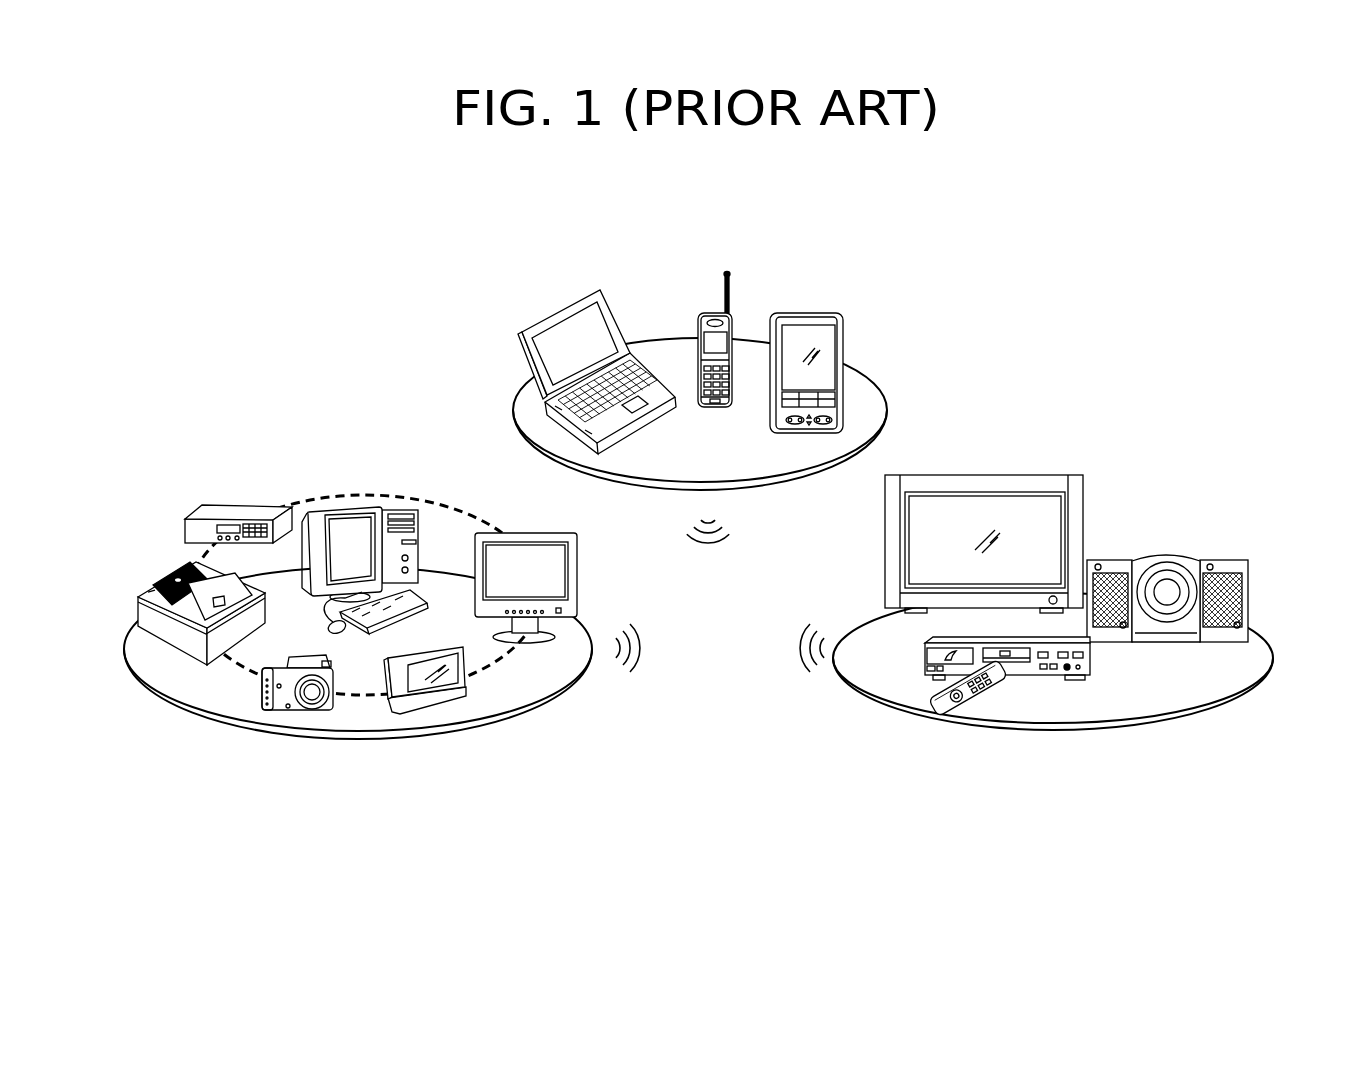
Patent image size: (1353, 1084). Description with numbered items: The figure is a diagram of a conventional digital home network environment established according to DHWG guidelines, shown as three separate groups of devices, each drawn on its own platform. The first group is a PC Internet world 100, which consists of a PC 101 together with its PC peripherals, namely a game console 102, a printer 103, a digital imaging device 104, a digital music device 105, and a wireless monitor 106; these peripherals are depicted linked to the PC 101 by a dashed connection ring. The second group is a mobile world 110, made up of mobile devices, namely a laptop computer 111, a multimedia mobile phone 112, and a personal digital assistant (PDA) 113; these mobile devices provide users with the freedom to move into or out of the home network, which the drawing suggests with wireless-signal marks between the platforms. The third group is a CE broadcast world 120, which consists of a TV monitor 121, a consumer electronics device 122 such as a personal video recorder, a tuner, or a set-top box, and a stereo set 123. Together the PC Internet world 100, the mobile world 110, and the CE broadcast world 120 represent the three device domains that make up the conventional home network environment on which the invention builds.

The PC Internet world 100 is at (358, 738).
The PC 101 is at (380, 507).
The game console 102 is at (248, 505).
The printer 103 is at (172, 572).
The digital imaging device 104 is at (262, 712).
The digital music device 105 is at (430, 712).
The wireless monitor 106 is at (535, 645).
The mobile world 110 is at (700, 320).
The laptop computer 111 is at (550, 311).
The multimedia mobile phone 112 is at (712, 313).
The personal digital assistant (PDA) 113 is at (808, 313).
The CE broadcast world 120 is at (1053, 751).
The TV monitor 121 is at (983, 475).
The consumer electronics device 122 is at (1028, 676).
The stereo set 123 is at (1167, 555).